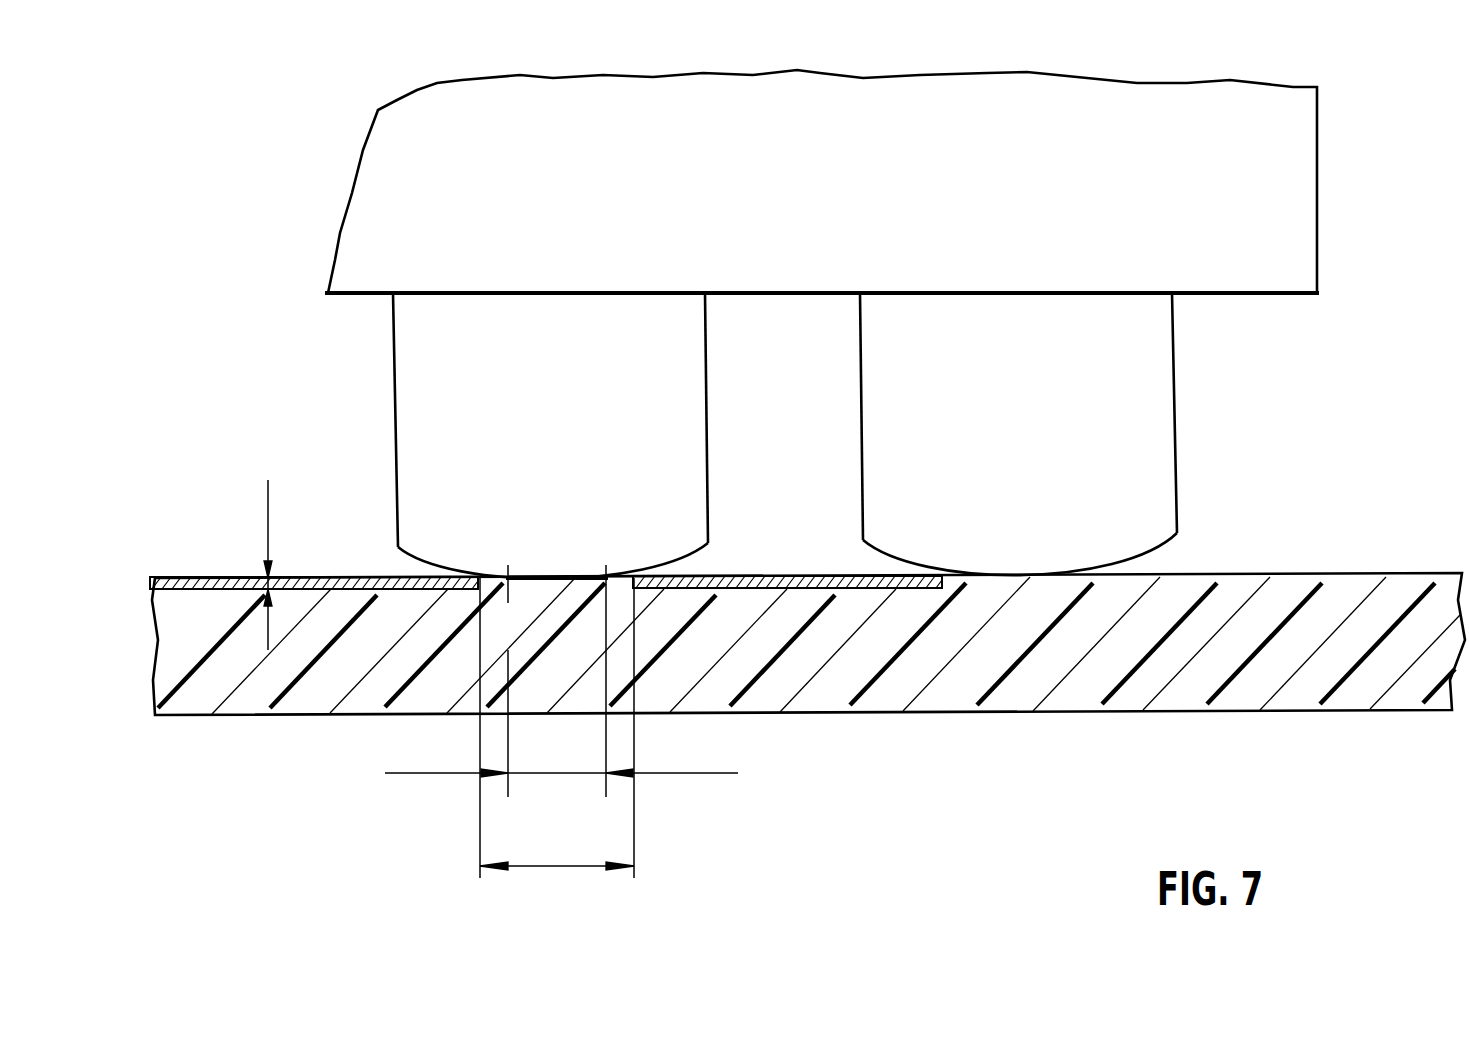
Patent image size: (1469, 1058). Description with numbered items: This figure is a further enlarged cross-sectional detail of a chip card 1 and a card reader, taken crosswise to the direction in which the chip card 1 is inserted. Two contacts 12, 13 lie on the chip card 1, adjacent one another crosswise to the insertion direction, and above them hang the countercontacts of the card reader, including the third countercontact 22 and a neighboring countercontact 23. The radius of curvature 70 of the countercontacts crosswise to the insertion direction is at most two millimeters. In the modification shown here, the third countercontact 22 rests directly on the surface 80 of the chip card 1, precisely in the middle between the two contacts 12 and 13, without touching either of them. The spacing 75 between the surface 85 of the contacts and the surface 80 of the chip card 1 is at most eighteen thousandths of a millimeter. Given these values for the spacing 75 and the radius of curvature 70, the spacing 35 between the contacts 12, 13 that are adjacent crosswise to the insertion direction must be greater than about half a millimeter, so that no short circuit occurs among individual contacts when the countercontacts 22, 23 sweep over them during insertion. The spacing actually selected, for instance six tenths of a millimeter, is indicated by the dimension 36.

The chip card 1 is at (1222, 713).
The contact 12 is at (333, 578).
The contact 13 is at (755, 577).
The third countercontact 22 is at (555, 399).
The countercontact 23 is at (1073, 308).
The spacing between adjacent contacts 35 is at (561, 773).
The selected spacing 36 is at (563, 866).
The radius of curvature 70 is at (440, 552).
The spacing 75 is at (267, 578).
The surface of the chip card 80 is at (492, 588).
The surface of the contacts 85 is at (170, 578).